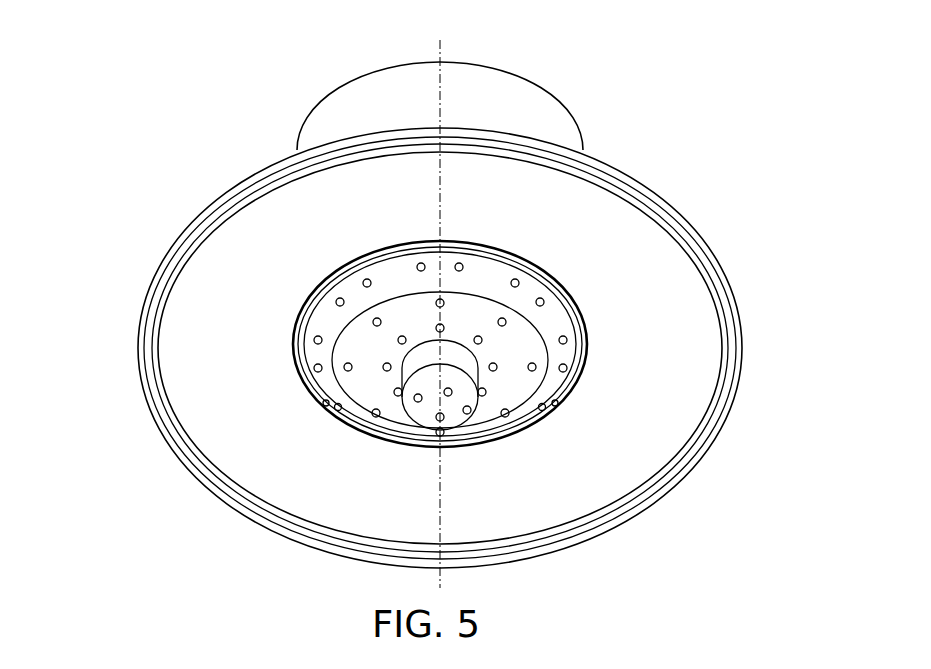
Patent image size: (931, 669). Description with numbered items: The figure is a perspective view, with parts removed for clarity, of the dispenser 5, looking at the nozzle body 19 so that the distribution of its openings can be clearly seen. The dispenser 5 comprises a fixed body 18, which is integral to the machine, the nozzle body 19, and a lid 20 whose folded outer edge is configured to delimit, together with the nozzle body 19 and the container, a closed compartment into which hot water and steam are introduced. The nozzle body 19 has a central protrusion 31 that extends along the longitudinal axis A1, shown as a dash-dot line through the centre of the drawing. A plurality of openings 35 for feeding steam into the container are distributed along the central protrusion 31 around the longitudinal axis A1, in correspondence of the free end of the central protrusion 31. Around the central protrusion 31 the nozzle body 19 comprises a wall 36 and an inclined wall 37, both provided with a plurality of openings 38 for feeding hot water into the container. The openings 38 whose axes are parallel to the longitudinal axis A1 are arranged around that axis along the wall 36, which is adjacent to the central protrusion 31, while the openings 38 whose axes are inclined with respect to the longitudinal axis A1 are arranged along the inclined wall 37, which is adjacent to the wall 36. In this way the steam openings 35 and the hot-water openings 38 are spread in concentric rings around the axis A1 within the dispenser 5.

The dispenser 5 is at (123, 188).
The longitudinal axis A1 is at (440, 53).
The fixed body 18 is at (586, 117).
The nozzle body 19 is at (598, 347).
The lid 20 is at (133, 342).
The central protrusion 31 is at (462, 404).
The openings 35 is at (416, 402).
The wall 36 is at (509, 247).
The inclined wall 37 is at (396, 276).
The openings 38 is at (440, 299).